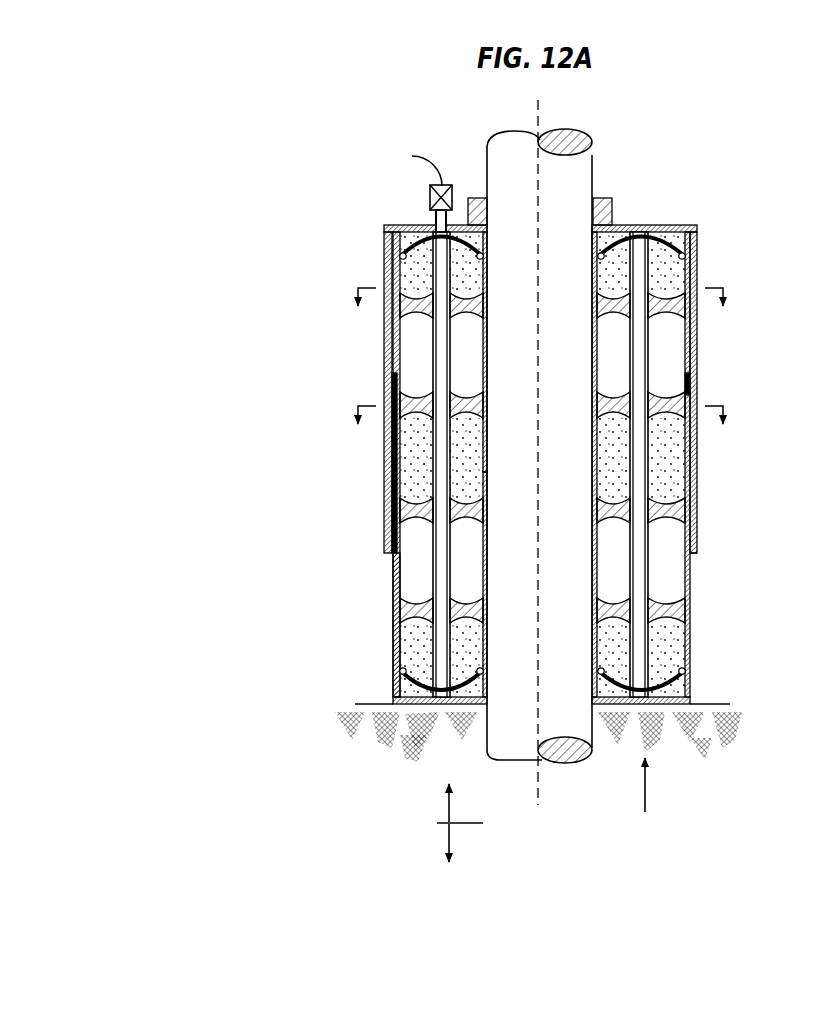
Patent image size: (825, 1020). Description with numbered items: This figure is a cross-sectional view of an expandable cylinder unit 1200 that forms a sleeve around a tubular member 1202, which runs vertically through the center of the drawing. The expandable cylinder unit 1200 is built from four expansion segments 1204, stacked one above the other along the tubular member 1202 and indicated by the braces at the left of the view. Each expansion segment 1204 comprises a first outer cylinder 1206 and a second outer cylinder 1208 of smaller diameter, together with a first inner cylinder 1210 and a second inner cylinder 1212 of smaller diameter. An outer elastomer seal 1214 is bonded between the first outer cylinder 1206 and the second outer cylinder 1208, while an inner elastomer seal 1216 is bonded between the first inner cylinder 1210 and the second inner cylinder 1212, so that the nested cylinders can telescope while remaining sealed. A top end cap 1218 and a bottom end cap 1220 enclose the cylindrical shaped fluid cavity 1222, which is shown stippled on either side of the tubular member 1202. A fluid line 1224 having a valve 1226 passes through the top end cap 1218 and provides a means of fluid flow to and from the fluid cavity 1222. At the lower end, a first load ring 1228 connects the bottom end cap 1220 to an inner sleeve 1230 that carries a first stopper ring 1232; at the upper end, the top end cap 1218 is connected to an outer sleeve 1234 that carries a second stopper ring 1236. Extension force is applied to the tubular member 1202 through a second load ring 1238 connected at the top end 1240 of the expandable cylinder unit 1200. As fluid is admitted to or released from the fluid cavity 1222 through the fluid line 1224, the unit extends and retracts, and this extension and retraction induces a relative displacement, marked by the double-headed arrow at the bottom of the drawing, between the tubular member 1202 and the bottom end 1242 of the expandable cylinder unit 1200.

The expandable cylinder unit 1200 is at (213, 452).
The tubular member 1202 is at (505, 140).
The expansion segment 1204 is at (308, 270).
The first outer cylinder 1206 is at (393, 488).
The second outer cylinder 1208 is at (490, 470).
The first inner cylinder 1210 is at (432, 580).
The second inner cylinder 1212 is at (455, 575).
The outer elastomer seal 1214 is at (398, 612).
The inner elastomer seal 1216 is at (488, 632).
The top end cap 1218 is at (386, 228).
The bottom end cap 1220 is at (445, 690).
The fluid cavity 1222 is at (660, 465).
The fluid line 1224 is at (435, 222).
The valve 1226 is at (430, 187).
The first load ring 1228 is at (690, 680).
The inner sleeve 1230 is at (683, 614).
The first stopper ring 1232 is at (693, 390).
The outer sleeve 1234 is at (697, 243).
The second stopper ring 1236 is at (697, 552).
The second load ring 1238 is at (605, 198).
The top end 1240 is at (681, 218).
The bottom end 1242 is at (645, 802).